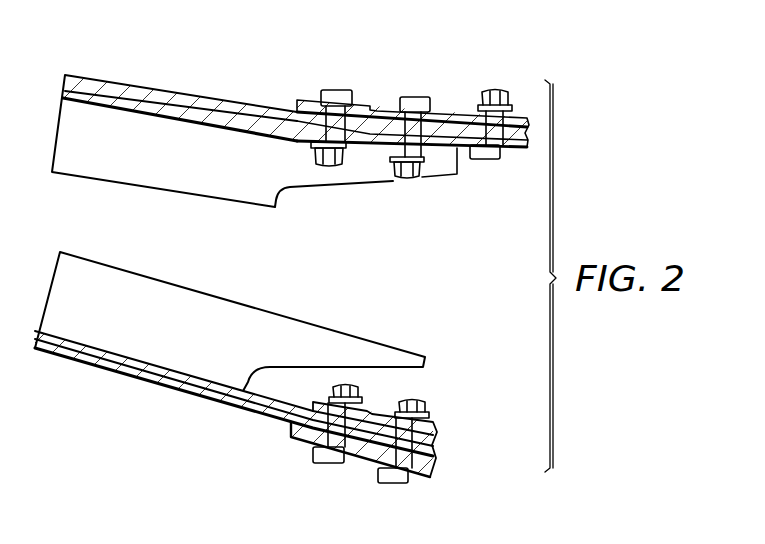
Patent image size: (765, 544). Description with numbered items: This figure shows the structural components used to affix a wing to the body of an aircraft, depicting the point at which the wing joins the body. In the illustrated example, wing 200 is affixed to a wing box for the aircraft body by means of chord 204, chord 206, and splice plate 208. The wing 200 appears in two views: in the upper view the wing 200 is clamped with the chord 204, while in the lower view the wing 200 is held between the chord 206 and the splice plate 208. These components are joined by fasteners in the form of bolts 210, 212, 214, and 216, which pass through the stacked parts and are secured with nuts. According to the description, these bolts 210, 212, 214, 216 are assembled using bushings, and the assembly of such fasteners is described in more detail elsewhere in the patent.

The wing 200 is at (163, 192).
The chord 204 is at (515, 150).
The chord 206 is at (432, 423).
The splice plate 208 is at (362, 458).
The bolt 210 is at (337, 90).
The bolt 212 is at (415, 98).
The bolt 214 is at (348, 386).
The bolt 216 is at (416, 401).